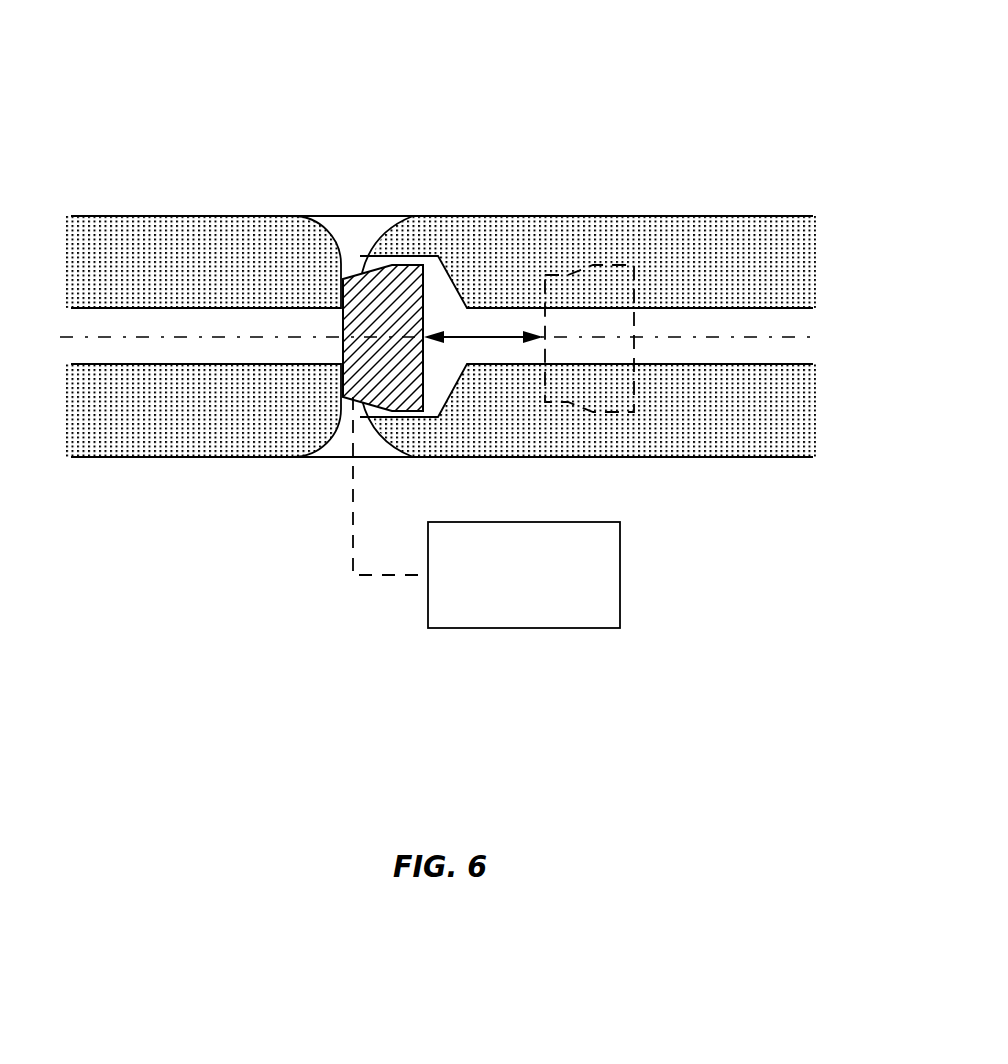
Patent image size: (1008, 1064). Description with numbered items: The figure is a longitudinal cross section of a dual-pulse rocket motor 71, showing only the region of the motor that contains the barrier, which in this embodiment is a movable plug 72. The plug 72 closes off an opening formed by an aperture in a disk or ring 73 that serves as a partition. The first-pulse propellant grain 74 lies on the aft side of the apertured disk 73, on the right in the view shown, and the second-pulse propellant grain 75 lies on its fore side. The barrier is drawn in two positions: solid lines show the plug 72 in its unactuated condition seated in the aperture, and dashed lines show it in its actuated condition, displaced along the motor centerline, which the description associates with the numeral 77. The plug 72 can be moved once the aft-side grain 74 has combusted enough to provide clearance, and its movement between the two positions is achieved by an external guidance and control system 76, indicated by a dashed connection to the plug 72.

The dual-pulse rocket motor 71 is at (648, 95).
The movable plug 72 is at (405, 258).
The apertured disk or ring 73 is at (357, 237).
The first-pulse propellant grain 74 is at (692, 243).
The second-pulse propellant grain 75 is at (167, 242).
The external guidance and control system 76 is at (613, 522).
The displaced cutter position 77 is at (780, 338).